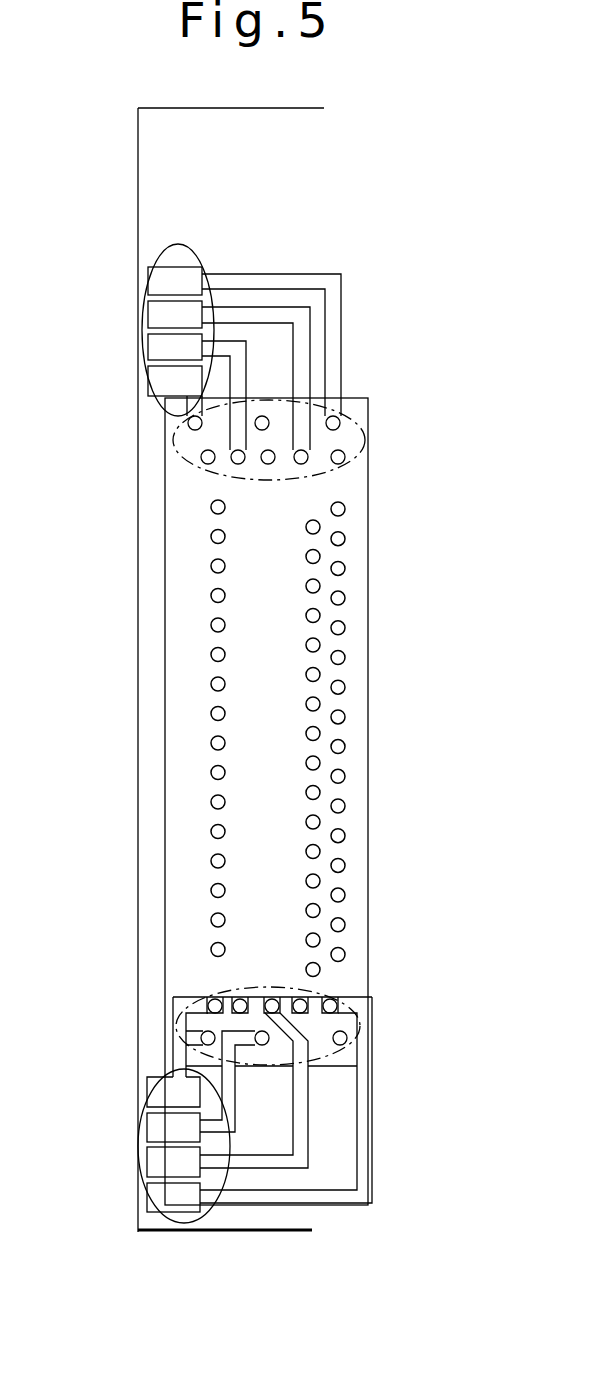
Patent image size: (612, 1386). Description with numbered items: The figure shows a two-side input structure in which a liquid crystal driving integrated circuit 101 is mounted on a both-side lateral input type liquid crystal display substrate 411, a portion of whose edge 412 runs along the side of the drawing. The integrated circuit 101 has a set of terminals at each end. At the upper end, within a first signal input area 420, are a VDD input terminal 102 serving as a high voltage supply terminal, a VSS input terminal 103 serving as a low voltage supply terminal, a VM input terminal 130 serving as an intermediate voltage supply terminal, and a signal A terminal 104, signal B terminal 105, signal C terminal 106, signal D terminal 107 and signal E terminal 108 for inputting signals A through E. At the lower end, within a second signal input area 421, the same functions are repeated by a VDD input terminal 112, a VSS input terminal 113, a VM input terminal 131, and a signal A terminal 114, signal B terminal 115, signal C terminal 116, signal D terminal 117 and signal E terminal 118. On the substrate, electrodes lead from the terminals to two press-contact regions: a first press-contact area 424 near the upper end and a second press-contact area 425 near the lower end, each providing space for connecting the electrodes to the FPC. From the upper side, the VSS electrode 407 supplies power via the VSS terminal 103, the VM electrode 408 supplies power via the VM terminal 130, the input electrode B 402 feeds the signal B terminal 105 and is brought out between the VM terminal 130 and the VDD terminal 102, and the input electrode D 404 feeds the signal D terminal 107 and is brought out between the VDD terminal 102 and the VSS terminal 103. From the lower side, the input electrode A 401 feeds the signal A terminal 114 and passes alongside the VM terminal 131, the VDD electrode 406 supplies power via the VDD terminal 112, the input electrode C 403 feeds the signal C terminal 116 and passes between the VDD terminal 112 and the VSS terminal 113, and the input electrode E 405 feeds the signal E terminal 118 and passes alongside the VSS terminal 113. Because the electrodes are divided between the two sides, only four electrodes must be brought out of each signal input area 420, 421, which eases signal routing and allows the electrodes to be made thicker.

The liquid crystal driving integrated circuit 101 is at (370, 610).
The VDD input terminal 102 is at (258, 432).
The VSS input terminal 103 is at (344, 415).
The signal A terminal 104 is at (200, 461).
The signal B terminal 105 is at (228, 472).
The signal C terminal 106 is at (345, 441).
The signal D terminal 107 is at (308, 463).
The signal E terminal 108 is at (347, 459).
The VDD input terminal 112 is at (262, 1030).
The VSS input terminal 113 is at (343, 1052).
The signal A terminal 114 is at (206, 1014).
The signal B terminal 115 is at (238, 996).
The signal C terminal 116 is at (280, 998).
The signal D terminal 117 is at (302, 998).
The signal E terminal 118 is at (336, 998).
The VM input terminal 130 is at (188, 428).
The VM input terminal 131 is at (200, 1040).
The input electrode A 401 is at (147, 1087).
The input electrode B 402 is at (148, 344).
The input electrode C 403 is at (147, 1157).
The input electrode D 404 is at (148, 320).
The input electrode E 405 is at (147, 1195).
The VDD electrode 406 is at (147, 1122).
The VSS electrode 407 is at (148, 272).
The VM electrode 408 is at (148, 390).
The liquid crystal display substrate 411 is at (237, 126).
The frame side edge 412 is at (138, 578).
The signal input area 420 is at (366, 409).
The signal input area 421 is at (356, 1040).
The first press-contact area 424 is at (205, 250).
The second press-contact area 425 is at (232, 1147).